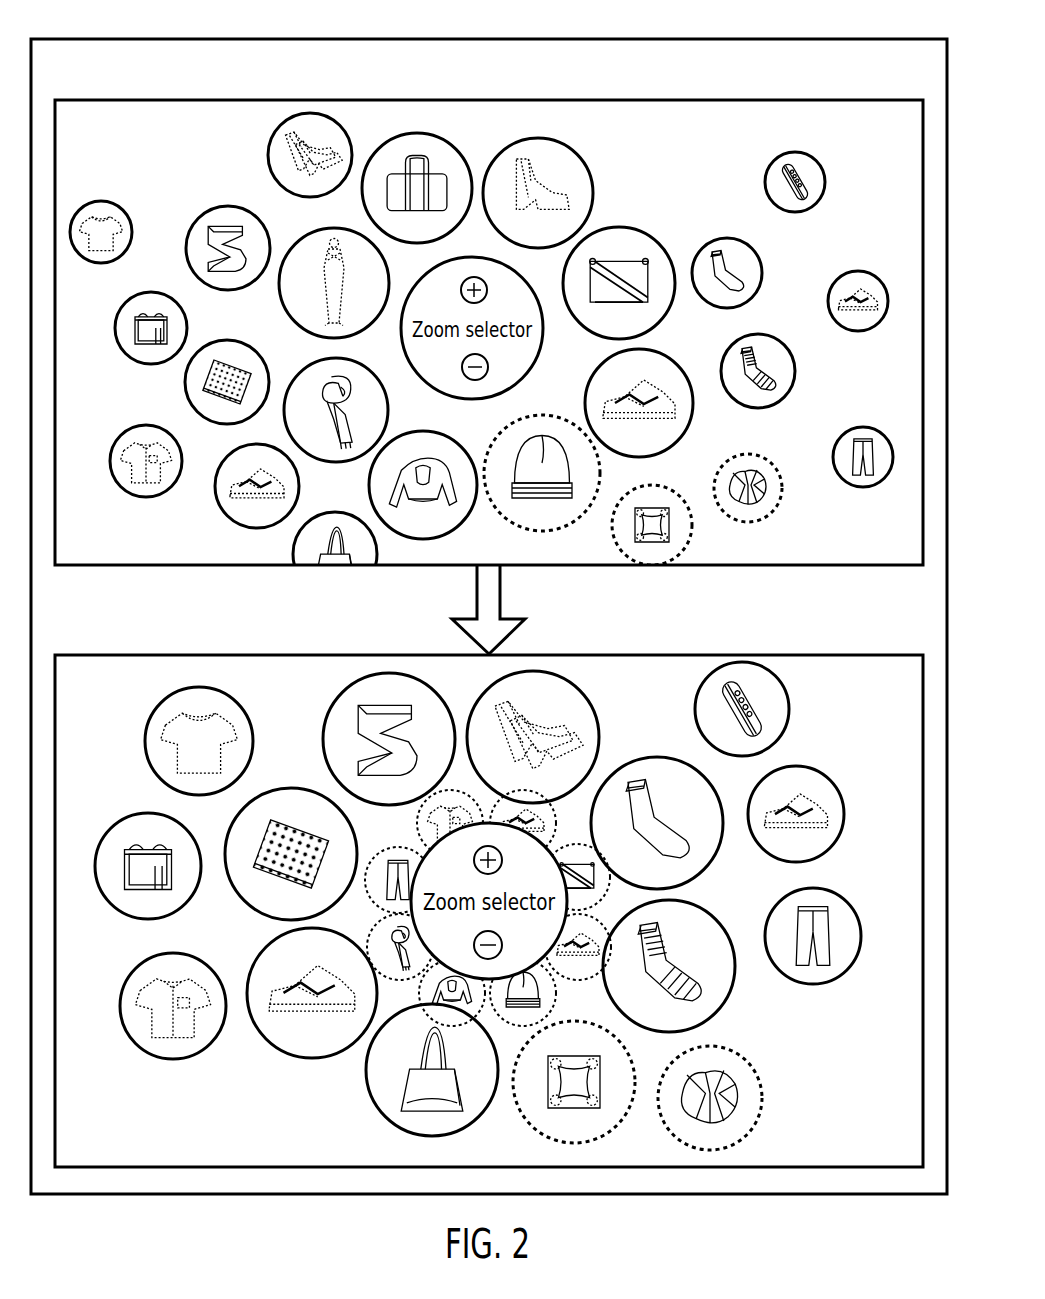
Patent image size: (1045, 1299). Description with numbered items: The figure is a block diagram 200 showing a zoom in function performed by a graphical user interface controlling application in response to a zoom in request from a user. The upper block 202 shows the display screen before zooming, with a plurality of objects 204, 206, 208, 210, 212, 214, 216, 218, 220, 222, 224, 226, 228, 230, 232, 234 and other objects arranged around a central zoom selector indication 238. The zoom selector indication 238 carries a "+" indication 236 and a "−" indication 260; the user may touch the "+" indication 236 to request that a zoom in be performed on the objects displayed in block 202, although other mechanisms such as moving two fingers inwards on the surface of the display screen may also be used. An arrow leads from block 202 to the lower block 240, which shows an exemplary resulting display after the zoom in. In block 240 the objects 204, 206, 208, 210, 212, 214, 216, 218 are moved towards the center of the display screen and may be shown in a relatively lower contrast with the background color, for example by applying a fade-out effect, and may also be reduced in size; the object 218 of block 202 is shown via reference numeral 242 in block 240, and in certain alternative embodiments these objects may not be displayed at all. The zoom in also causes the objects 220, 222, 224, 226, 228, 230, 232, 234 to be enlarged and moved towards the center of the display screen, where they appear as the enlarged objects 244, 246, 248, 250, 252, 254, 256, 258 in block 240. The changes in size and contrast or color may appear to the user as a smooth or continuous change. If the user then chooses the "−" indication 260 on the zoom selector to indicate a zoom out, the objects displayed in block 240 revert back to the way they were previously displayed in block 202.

The block diagram 200 is at (72, 39).
The block 202 is at (232, 99).
The object 204 is at (450, 138).
The object 206 is at (575, 148).
The object 208 is at (633, 228).
The object 210 is at (656, 352).
The object 212 is at (558, 415).
The object 214 is at (450, 420).
The object 216 is at (293, 372).
The object 218 is at (334, 228).
The object 220 is at (268, 157).
The object 222 is at (206, 212).
The object 224 is at (186, 388).
The object 226 is at (218, 513).
The object 228 is at (292, 550).
The object 230 is at (645, 490).
The object 232 is at (779, 336).
The object 234 is at (726, 239).
The "+" indication 236 is at (483, 281).
The zoom selector indication 238 is at (432, 343).
The block 240 is at (118, 655).
The object after zoom in 242 is at (370, 870).
The enlarged object 244 is at (590, 697).
The enlarged object 246 is at (326, 698).
The enlarged object 248 is at (285, 789).
The enlarged object 250 is at (262, 948).
The enlarged object 252 is at (367, 1083).
The enlarged object 254 is at (545, 1131).
The enlarged object 256 is at (700, 904).
The enlarged object 258 is at (654, 757).
The "−" indication 260 is at (502, 945).